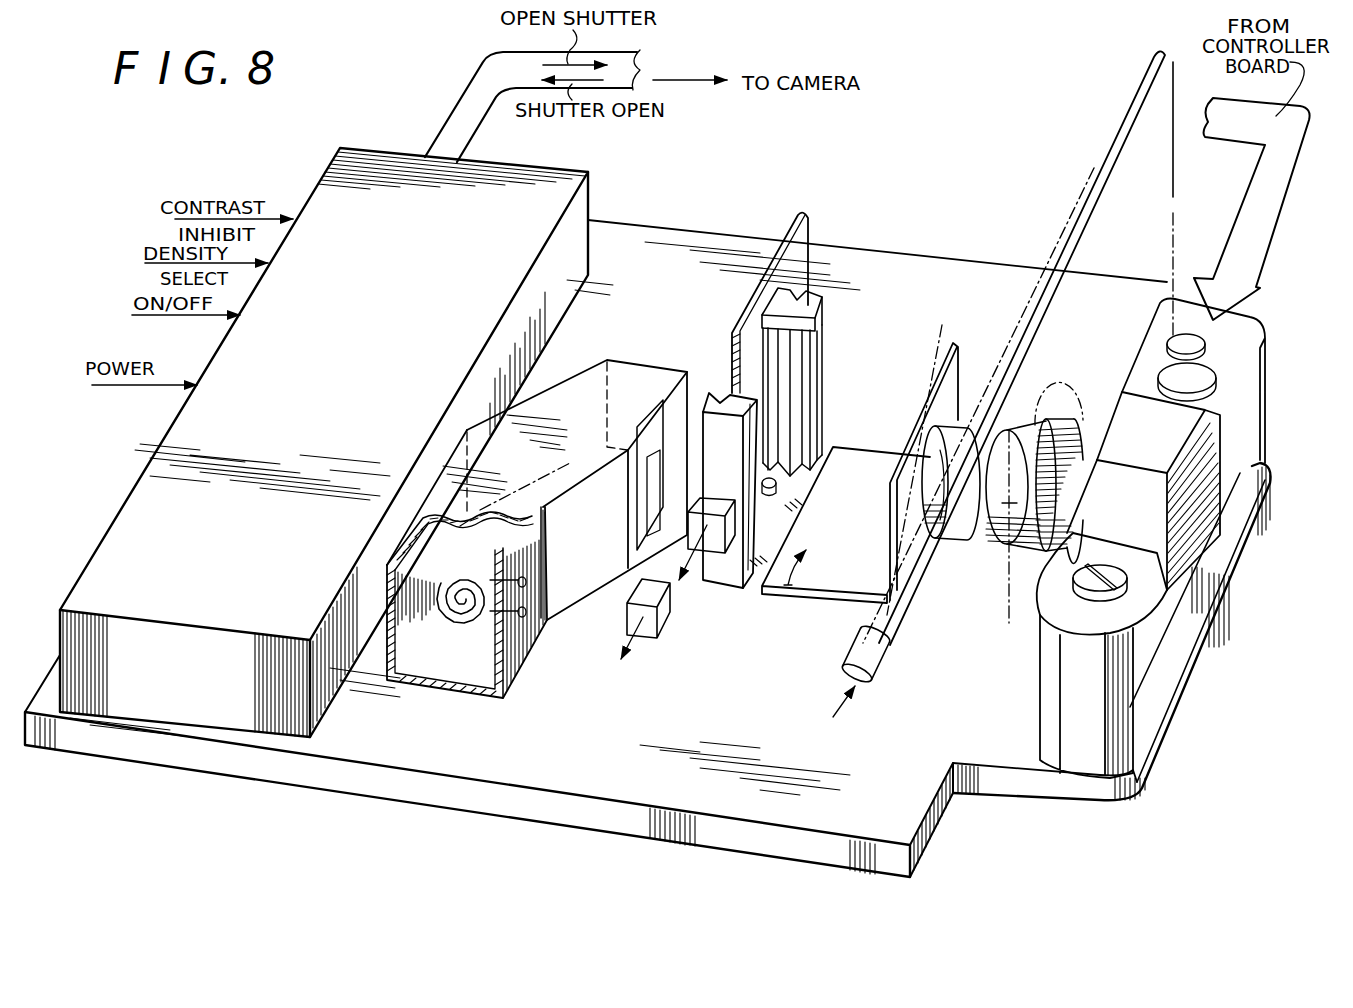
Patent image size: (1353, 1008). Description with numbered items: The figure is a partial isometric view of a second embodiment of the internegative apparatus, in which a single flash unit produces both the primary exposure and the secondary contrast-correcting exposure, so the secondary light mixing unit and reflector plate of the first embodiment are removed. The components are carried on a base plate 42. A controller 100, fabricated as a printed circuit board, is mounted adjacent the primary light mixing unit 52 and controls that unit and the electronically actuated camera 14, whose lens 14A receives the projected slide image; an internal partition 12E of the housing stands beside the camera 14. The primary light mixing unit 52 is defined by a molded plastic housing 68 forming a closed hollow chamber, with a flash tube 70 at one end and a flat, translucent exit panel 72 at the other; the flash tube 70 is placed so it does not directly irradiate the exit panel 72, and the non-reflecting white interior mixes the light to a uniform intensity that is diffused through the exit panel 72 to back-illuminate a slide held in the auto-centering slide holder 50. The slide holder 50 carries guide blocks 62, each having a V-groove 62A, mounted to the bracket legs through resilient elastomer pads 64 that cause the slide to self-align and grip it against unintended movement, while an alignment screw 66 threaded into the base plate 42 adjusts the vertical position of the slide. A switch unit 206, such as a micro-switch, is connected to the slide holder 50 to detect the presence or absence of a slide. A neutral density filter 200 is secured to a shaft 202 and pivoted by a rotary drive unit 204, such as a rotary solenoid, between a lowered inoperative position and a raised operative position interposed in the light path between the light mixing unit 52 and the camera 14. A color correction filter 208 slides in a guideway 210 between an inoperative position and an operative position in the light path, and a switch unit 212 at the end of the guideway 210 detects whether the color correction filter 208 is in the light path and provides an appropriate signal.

The internal partition 12E is at (1115, 128).
The camera 14 is at (1268, 410).
The lens 14A is at (1028, 408).
The base plate 42 is at (650, 716).
The auto-centering slide holder 50 is at (707, 592).
The primary light mixing unit 52 is at (577, 360).
The guide blocks 62 is at (824, 305).
The V-groove 62A is at (793, 350).
The resilient elastomer pads 64 is at (792, 290).
The alignment screw 66 is at (778, 486).
The housing 68 is at (557, 609).
The flash tube 70 is at (470, 572).
The exit panel 72 is at (648, 478).
The controller 100 is at (360, 368).
The neutral density filter 200 is at (937, 353).
The shaft 202 is at (857, 620).
The rotary drive unit 204 is at (850, 674).
The switch unit 206 is at (715, 498).
The color correction filter 208 is at (792, 215).
The guideway 210 is at (667, 560).
The switch unit 212 is at (658, 628).